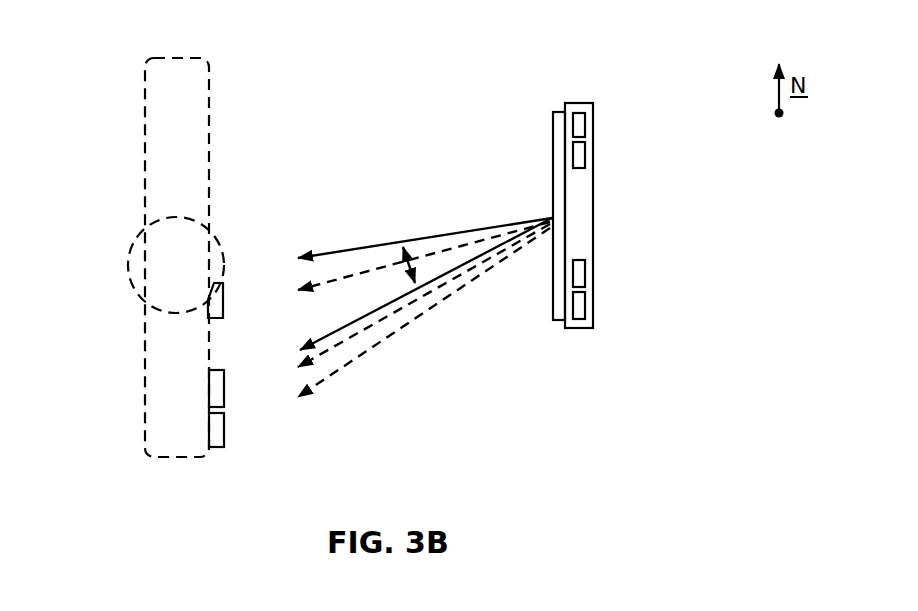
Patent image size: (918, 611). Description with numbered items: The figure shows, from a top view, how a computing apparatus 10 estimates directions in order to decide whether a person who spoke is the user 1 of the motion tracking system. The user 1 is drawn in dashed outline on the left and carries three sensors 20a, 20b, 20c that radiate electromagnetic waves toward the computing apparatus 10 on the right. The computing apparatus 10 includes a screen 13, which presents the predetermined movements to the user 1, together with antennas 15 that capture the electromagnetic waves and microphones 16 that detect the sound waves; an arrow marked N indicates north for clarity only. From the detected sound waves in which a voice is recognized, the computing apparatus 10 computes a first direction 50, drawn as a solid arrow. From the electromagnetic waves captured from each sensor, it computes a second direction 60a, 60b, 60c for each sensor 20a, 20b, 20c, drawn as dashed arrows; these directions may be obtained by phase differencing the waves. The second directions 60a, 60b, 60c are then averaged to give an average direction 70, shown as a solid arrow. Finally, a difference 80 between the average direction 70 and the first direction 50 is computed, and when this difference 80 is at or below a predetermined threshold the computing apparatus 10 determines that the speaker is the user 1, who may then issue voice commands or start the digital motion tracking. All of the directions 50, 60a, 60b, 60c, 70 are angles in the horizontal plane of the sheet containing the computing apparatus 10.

The user 1 is at (153, 253).
The sensor 20a is at (213, 386).
The sensor 20b is at (213, 431).
The sensor 20c is at (208, 306).
The computing apparatus 10 is at (580, 230).
The screen 13 is at (560, 197).
The antenna 15 is at (606, 152).
The microphone 16 is at (606, 122).
The first direction 50 is at (328, 245).
The second direction 60a is at (294, 378).
The second direction 60b is at (344, 425).
The second direction 60c is at (297, 298).
The average direction 70 is at (304, 342).
The difference 80 is at (391, 283).